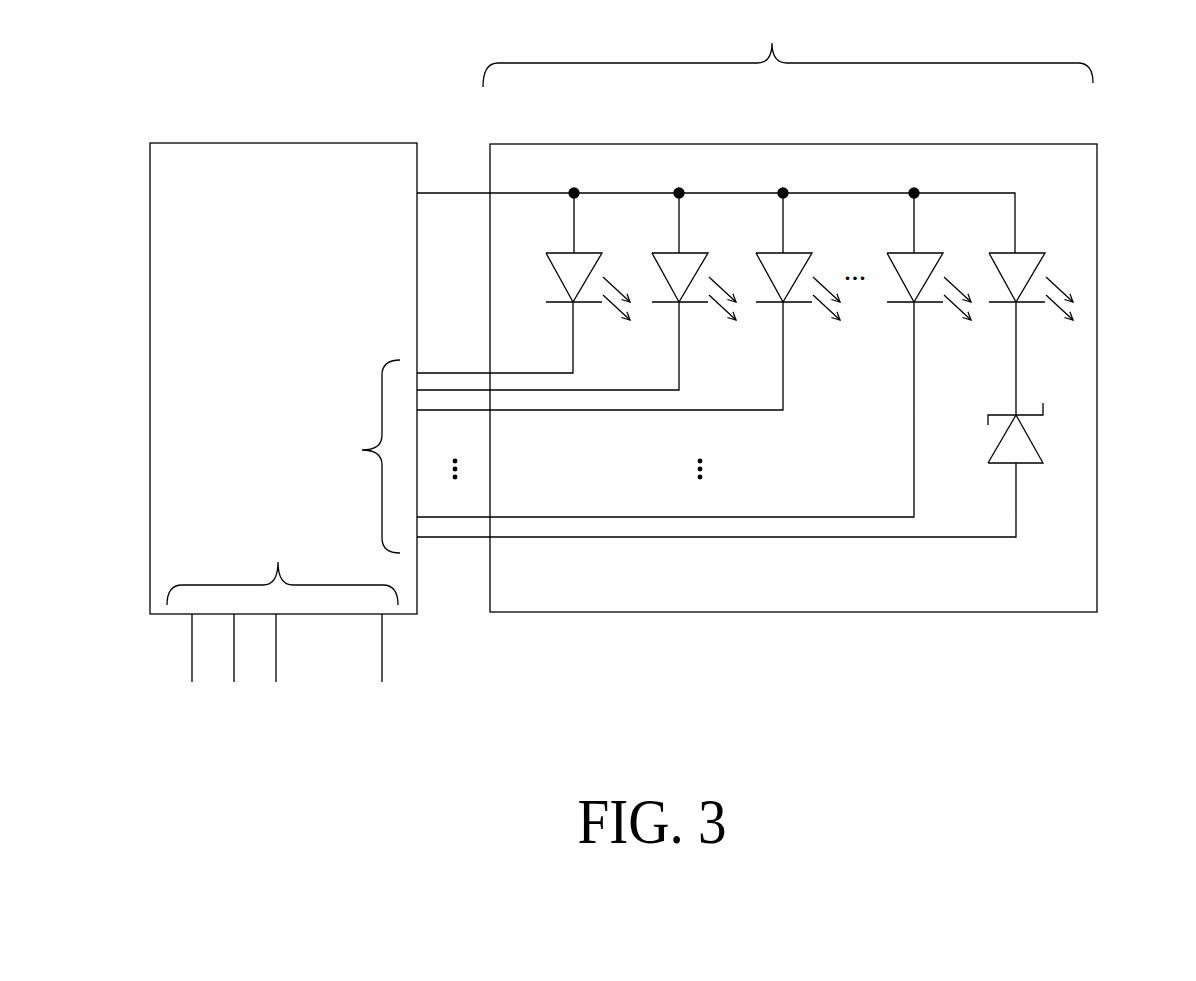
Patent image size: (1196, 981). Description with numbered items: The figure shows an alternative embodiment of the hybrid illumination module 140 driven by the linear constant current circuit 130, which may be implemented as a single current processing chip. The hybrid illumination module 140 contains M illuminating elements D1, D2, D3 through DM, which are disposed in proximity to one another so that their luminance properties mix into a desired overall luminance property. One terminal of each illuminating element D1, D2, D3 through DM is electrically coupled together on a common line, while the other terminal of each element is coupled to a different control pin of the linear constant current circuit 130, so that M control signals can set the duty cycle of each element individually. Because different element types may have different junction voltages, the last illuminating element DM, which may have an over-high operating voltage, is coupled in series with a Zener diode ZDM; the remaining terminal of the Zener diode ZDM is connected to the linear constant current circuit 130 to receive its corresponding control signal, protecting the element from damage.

The linear constant current circuit 130 is at (277, 143).
The hybrid illumination module 140 is at (833, 306).
The illuminating element D1 is at (592, 253).
The illuminating element D2 is at (698, 253).
The illuminating element D3 is at (802, 253).
The illuminating element DM is at (1035, 253).
The Zener diode ZDM is at (1032, 440).